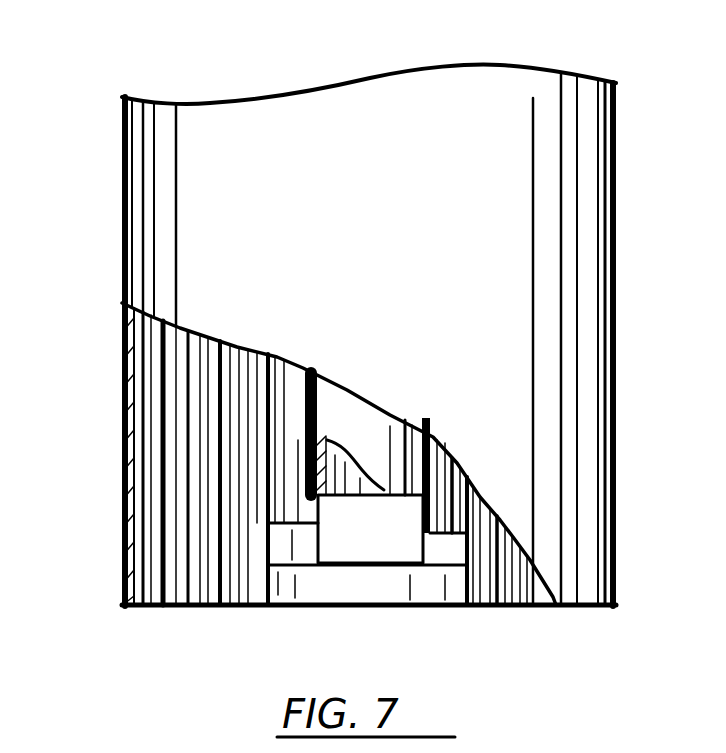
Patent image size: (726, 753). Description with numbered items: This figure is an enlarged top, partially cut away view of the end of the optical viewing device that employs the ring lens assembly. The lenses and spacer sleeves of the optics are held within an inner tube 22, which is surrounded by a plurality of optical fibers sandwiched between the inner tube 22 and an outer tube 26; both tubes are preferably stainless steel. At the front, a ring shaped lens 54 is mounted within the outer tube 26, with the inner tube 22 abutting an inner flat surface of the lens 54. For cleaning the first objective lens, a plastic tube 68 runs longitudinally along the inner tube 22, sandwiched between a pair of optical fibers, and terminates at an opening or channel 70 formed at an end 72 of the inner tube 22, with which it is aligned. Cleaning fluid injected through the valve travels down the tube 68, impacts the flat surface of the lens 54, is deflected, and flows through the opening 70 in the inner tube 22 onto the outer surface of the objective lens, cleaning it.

The inner tube 22 is at (292, 555).
The outer tube 26 is at (613, 460).
The ring shaped lens 54 is at (417, 593).
The plastic tube 68 is at (332, 457).
The opening or channel 70 is at (422, 552).
The end of inner tube 72 is at (378, 552).